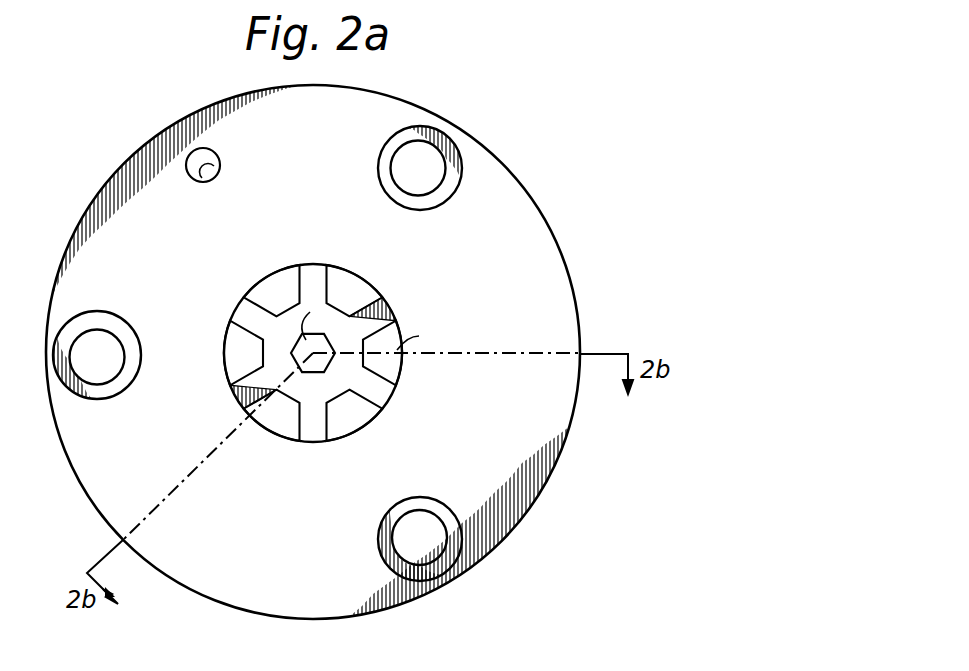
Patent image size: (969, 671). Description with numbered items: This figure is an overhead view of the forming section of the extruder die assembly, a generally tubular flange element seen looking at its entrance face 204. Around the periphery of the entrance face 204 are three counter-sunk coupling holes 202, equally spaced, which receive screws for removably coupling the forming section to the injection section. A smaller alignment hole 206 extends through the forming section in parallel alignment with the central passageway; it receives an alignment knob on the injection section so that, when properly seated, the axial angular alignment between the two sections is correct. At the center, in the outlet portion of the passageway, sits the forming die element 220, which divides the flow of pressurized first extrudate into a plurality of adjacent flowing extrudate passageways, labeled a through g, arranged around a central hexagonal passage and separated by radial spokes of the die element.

The counter-sunk coupling holes 202 is at (442, 190).
The entrance face 204 is at (578, 304).
The alignment hole 206 is at (207, 182).
The forming die element 220 is at (386, 391).